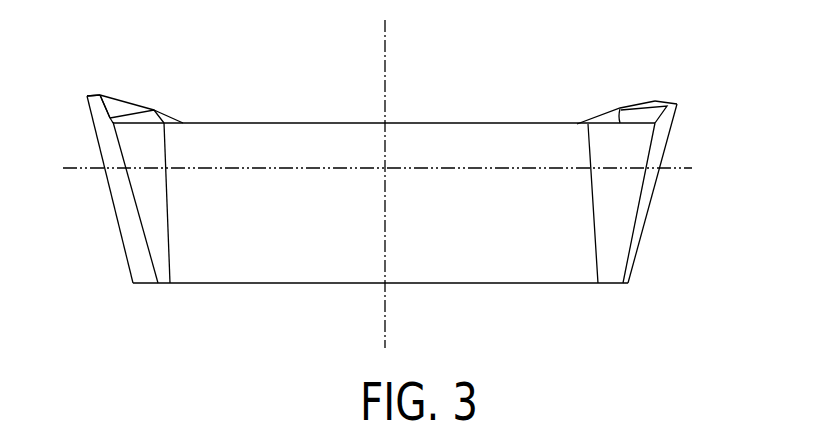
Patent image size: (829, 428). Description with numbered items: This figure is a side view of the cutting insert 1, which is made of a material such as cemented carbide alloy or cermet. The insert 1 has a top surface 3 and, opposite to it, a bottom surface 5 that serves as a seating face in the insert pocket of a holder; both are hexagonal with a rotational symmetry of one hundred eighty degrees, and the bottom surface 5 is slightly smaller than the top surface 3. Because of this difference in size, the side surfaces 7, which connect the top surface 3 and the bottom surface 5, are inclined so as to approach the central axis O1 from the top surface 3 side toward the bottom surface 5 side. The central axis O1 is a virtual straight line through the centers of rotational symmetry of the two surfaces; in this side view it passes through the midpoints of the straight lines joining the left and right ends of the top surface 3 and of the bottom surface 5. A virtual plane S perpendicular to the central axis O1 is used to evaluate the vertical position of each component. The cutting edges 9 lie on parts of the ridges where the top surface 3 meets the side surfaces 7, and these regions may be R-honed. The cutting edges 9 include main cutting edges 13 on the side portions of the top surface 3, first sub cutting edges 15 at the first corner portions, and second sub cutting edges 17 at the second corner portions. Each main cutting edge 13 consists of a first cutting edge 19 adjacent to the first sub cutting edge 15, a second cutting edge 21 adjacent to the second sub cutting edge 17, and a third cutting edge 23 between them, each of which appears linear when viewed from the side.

The cutting insert 1 is at (493, 89).
The top surface 3 is at (330, 123).
The bottom surface 5 is at (245, 283).
The side surfaces 7 is at (128, 218).
The cutting edges 9 is at (360, 89).
The main cutting edges 13 is at (148, 63).
The first sub cutting edges 15 is at (87, 96).
The second sub cutting edges 17 is at (141, 121).
The first cutting edge 19 is at (100, 95).
The second cutting edge 21 is at (118, 113).
The third cutting edge 23 is at (110, 114).
The central axis O1 is at (386, 174).
The virtual plane S is at (368, 168).